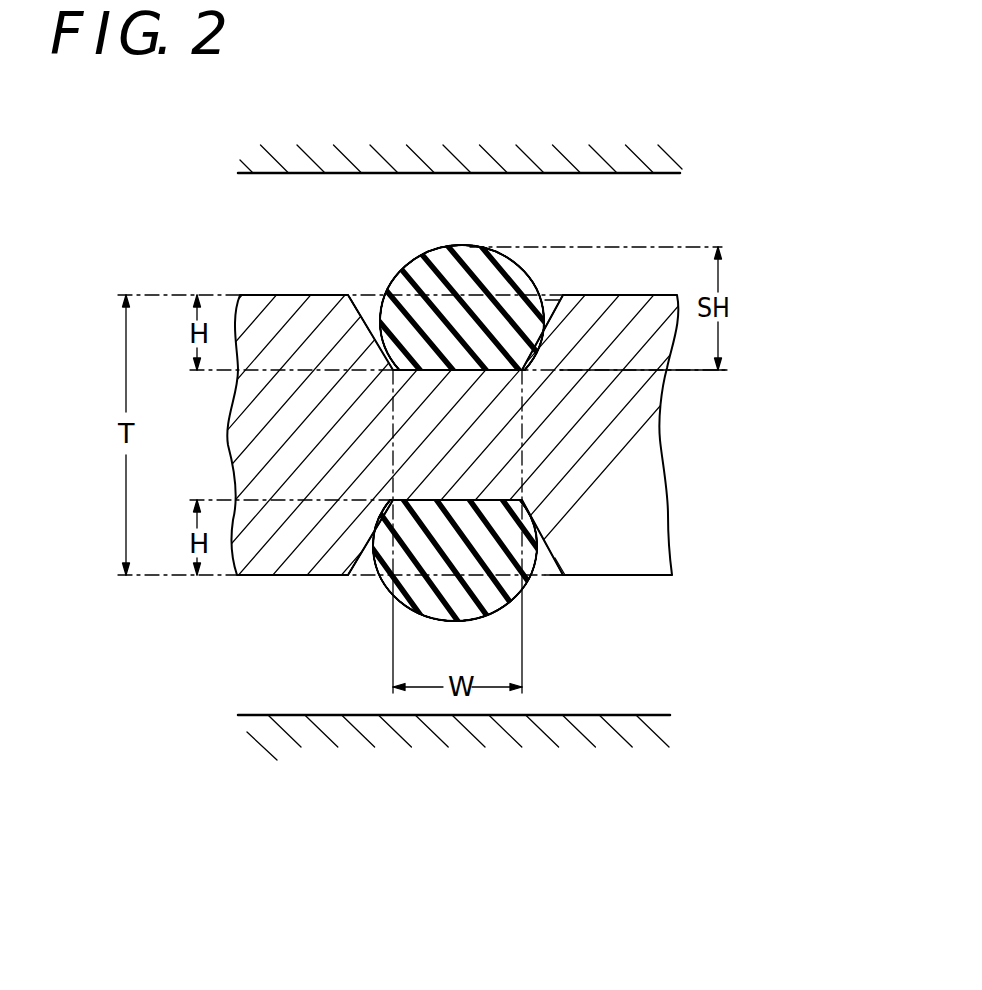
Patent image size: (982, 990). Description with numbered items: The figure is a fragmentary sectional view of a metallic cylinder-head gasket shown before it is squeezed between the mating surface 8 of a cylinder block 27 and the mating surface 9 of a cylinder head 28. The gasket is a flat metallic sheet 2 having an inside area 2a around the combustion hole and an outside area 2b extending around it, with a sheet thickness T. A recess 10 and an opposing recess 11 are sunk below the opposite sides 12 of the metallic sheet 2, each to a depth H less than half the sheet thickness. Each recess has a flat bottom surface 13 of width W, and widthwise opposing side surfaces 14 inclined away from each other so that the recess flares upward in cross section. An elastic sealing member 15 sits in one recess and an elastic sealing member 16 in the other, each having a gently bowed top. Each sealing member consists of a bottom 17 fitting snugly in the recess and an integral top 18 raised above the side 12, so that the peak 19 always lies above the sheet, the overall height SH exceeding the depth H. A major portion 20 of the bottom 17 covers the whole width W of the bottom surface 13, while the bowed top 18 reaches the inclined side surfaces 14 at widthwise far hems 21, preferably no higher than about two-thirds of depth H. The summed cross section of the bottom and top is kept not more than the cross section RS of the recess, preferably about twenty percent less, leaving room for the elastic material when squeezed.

The metallic sheet 2 is at (650, 446).
The inside area 2a is at (640, 550).
The outside area 2b is at (683, 555).
The mating surface 8 is at (633, 715).
The mating surface 9 is at (645, 174).
The recess 10 is at (383, 300).
The recess 11 is at (378, 442).
The side 12 is at (638, 293).
The bottom surface 13 is at (480, 332).
The side surface 14 is at (364, 312).
The elastic sealing member 15 is at (481, 238).
The elastic sealing member 16 is at (452, 398).
The bottom 17 is at (400, 280).
The top 18 is at (443, 283).
The peak 19 is at (452, 246).
The major portion 20 is at (462, 333).
The widthwise far hem 21 is at (549, 320).
The cylinder block 27 is at (270, 732).
The cylinder head 28 is at (293, 162).
The cross section of recess RS is at (546, 308).